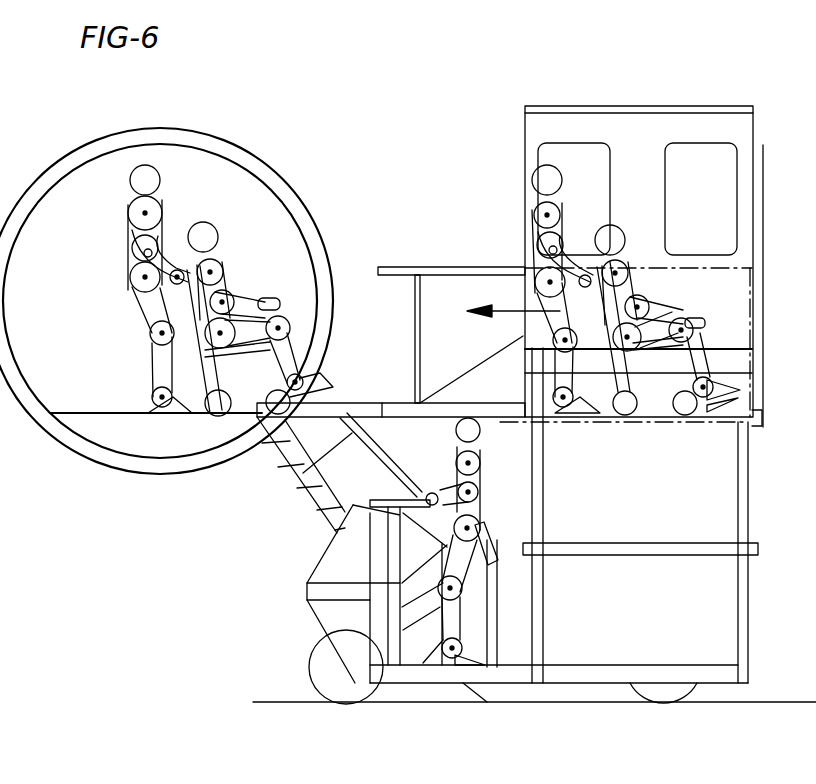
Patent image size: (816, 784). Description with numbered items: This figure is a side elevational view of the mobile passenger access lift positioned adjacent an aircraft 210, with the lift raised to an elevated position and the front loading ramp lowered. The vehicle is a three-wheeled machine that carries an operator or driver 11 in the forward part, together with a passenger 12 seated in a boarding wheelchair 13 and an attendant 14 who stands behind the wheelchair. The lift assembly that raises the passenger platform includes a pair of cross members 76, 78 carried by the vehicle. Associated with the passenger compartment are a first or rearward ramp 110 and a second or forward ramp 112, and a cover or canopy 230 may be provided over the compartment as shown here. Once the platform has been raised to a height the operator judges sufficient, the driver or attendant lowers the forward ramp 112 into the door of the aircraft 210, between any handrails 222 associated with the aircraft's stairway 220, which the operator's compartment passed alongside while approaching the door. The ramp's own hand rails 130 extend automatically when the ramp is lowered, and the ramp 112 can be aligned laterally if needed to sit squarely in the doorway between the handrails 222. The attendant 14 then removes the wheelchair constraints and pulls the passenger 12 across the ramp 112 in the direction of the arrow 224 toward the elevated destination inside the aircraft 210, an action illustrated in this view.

The aircraft 210 is at (247, 140).
The cover or canopy 230 is at (710, 123).
The attendant 14 is at (535, 180).
The passenger 12 is at (613, 224).
The hand rails 130 is at (430, 268).
The first or rearward ramp 110 is at (758, 284).
The second or forward ramp 112 is at (397, 410).
The arrow 224 is at (513, 311).
The cross member 78 is at (737, 362).
The cross member 76 is at (677, 545).
The boarding wheelchair 13 is at (597, 417).
The operator or driver 11 is at (457, 433).
The handrails 222 is at (378, 472).
The stairway 220 is at (307, 507).